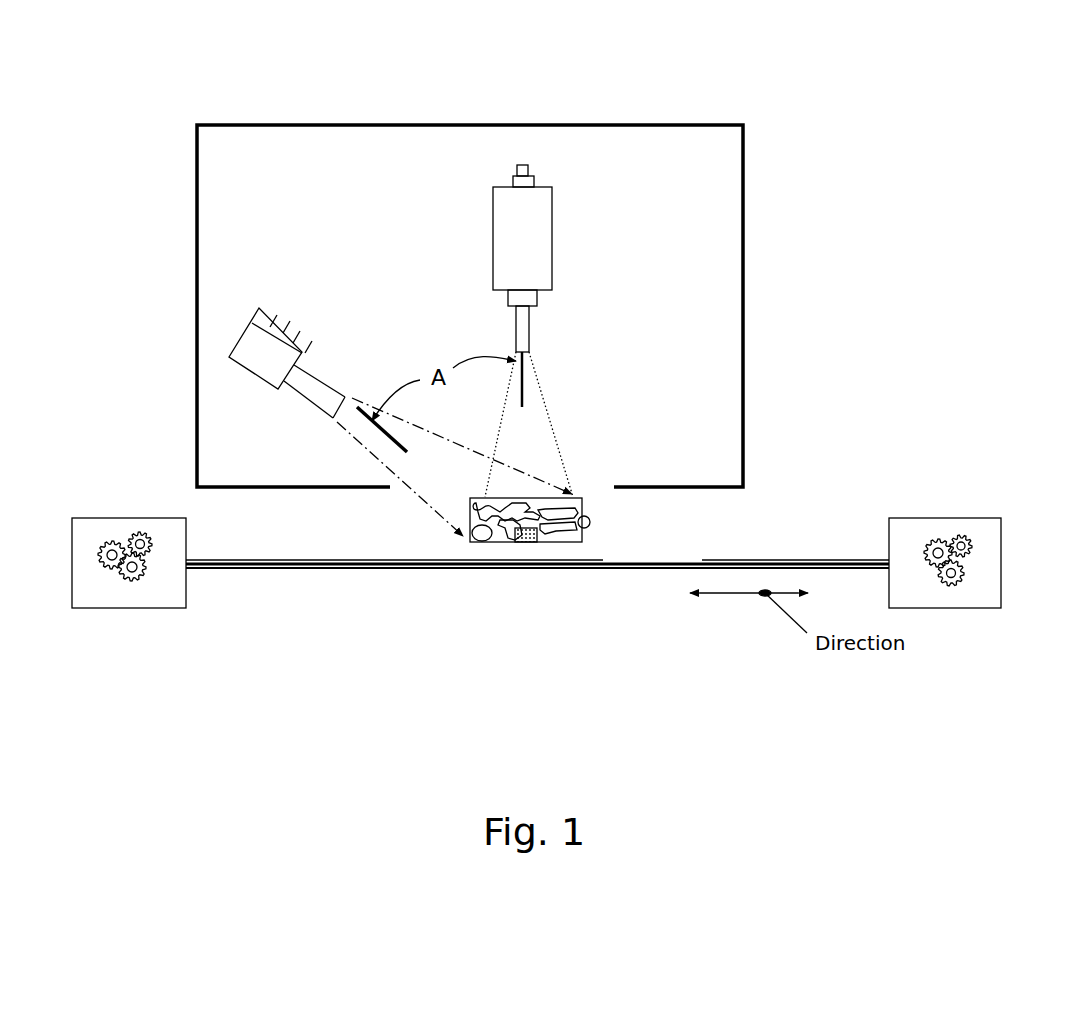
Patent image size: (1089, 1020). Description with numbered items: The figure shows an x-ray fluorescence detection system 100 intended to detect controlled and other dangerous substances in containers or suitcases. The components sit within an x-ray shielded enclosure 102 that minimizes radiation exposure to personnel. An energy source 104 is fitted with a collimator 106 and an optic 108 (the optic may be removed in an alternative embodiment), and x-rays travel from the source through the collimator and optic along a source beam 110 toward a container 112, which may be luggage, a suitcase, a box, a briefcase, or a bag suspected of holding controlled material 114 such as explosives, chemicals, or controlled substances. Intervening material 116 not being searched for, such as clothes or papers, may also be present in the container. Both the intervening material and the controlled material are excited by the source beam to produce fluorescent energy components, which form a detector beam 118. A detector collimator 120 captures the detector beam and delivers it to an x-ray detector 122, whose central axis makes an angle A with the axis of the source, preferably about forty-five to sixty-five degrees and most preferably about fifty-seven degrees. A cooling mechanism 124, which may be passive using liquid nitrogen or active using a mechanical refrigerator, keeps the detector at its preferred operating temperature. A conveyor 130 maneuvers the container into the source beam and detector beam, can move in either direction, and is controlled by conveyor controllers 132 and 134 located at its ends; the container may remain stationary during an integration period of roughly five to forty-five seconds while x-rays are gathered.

The x-ray fluorescence detection system 100 is at (623, 83).
The x-ray shielded enclosure 102 is at (743, 285).
The energy source 104 is at (282, 358).
The collimator 106 is at (314, 388).
The optic 108 is at (330, 402).
The source beam 110 is at (442, 477).
The container 112 is at (578, 537).
The controlled material 114 is at (525, 535).
The intervening material 116 is at (539, 513).
The detector beam 118 is at (523, 435).
The detector collimator 120 is at (522, 331).
The x-ray detector 122 is at (536, 298).
The cooling mechanism 124 is at (525, 261).
The conveyor 130 is at (823, 559).
The conveyor controller 132 is at (156, 592).
The conveyor controller 134 is at (993, 518).